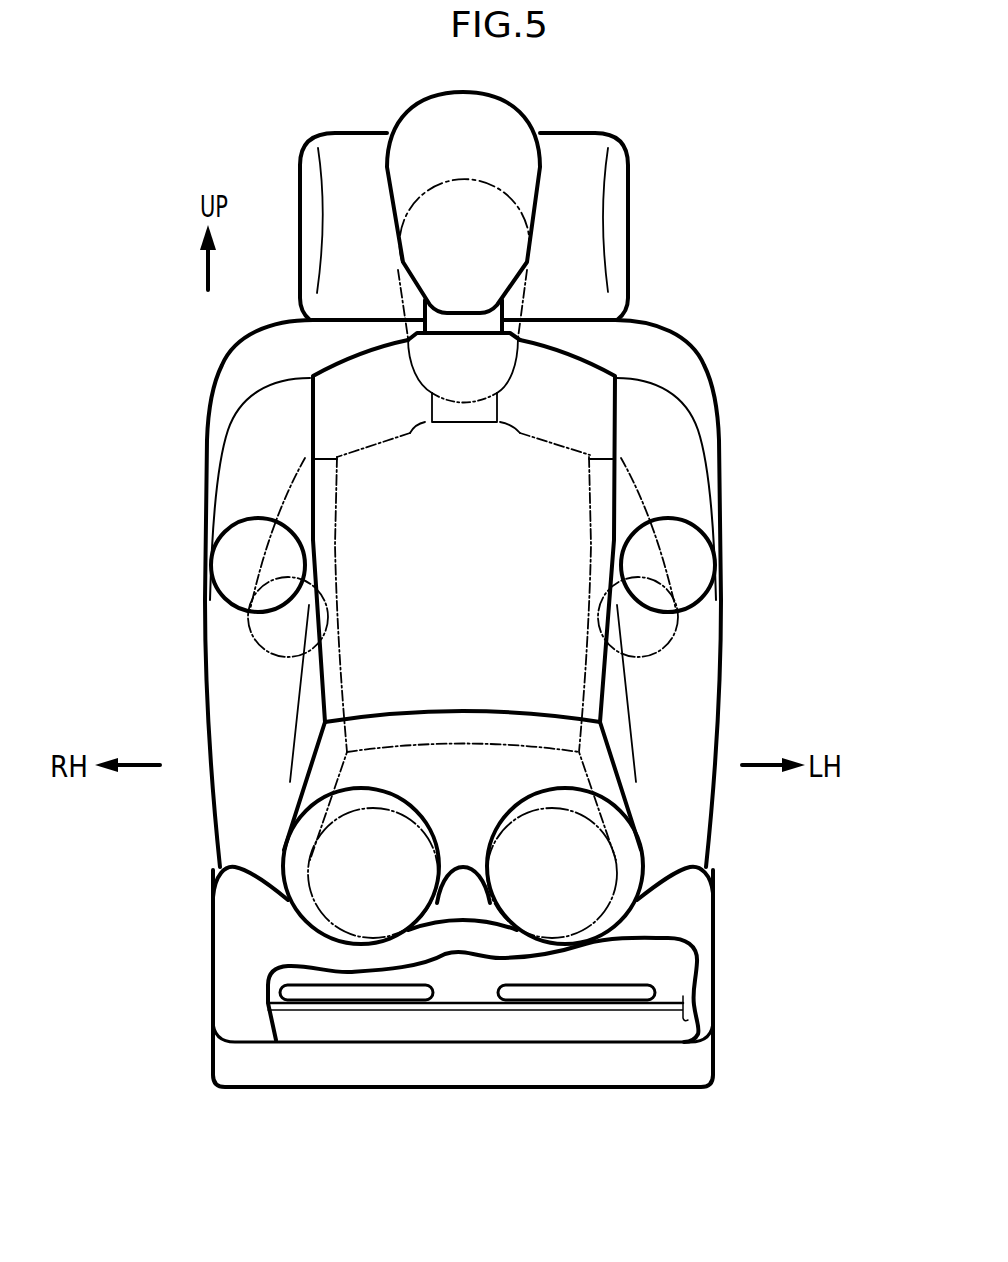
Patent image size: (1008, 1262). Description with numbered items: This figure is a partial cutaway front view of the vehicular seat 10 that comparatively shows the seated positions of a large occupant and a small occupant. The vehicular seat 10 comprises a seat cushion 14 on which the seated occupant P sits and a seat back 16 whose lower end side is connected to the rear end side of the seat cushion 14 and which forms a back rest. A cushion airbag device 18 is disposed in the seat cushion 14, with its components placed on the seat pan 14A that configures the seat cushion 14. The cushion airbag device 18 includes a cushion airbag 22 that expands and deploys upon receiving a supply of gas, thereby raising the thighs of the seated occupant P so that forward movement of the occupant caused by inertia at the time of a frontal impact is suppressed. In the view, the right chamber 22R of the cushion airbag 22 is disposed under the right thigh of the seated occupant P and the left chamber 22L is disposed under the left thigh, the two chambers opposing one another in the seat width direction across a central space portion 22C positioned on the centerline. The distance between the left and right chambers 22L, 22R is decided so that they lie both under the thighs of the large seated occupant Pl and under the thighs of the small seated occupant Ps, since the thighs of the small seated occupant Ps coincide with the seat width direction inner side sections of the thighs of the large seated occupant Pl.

The vehicular seat 10 is at (531, 653).
The seat cushion 14 is at (703, 937).
The seat pan 14A is at (443, 1010).
The seat back 16 is at (683, 363).
The cushion airbag device 18 is at (655, 968).
The cushion airbag 22 is at (503, 1079).
The right chamber 22R is at (303, 995).
The central space portion 22C is at (467, 995).
The left chamber 22L is at (592, 995).
The seated occupant P is at (480, 496).
The large seated occupant PI is at (520, 100).
The small seated occupant Ps is at (544, 290).